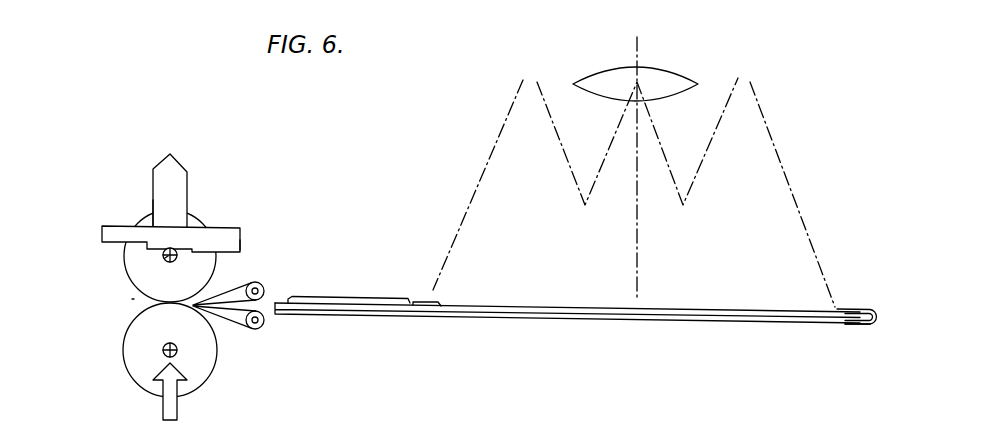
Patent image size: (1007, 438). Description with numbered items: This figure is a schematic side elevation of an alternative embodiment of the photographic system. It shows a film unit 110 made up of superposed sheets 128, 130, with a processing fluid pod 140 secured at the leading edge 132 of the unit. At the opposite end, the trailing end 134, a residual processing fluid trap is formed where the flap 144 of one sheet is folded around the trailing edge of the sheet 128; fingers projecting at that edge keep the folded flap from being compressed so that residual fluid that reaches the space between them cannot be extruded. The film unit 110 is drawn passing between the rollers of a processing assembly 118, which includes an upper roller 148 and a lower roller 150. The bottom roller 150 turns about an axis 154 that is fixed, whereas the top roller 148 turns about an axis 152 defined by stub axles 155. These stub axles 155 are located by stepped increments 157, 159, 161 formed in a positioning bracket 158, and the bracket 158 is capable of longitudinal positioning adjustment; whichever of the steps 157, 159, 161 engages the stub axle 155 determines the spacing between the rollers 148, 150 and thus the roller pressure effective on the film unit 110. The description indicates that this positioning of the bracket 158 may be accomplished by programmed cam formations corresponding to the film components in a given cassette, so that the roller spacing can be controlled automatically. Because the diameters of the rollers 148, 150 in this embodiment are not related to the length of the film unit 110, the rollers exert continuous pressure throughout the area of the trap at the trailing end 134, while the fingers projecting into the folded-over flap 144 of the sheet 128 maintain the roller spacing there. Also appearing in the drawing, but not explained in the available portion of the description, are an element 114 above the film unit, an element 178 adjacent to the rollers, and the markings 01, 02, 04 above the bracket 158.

The position 01 is at (133, 137).
The position 02 is at (166, 137).
The position 04 is at (213, 137).
The film unit 110 is at (586, 288).
The lens 114 is at (656, 77).
The processing assembly 118 is at (130, 299).
The sheet 128 is at (788, 325).
The sheet 130 is at (733, 311).
The leading edge 132 is at (273, 318).
The trailing end 134 is at (878, 320).
The processing fluid pod 140 is at (343, 297).
The flap 144 is at (866, 300).
The upper roller 148 is at (185, 298).
The lower roller 150 is at (202, 370).
The axis 152 is at (177, 259).
The axis 154 is at (168, 356).
The stub axles 155 is at (165, 258).
The stepped increment 157 is at (108, 252).
The positioning bracket 158 is at (178, 187).
The stepped increment 159 is at (167, 253).
The stepped increment 161 is at (230, 262).
The link arms 178 is at (276, 288).